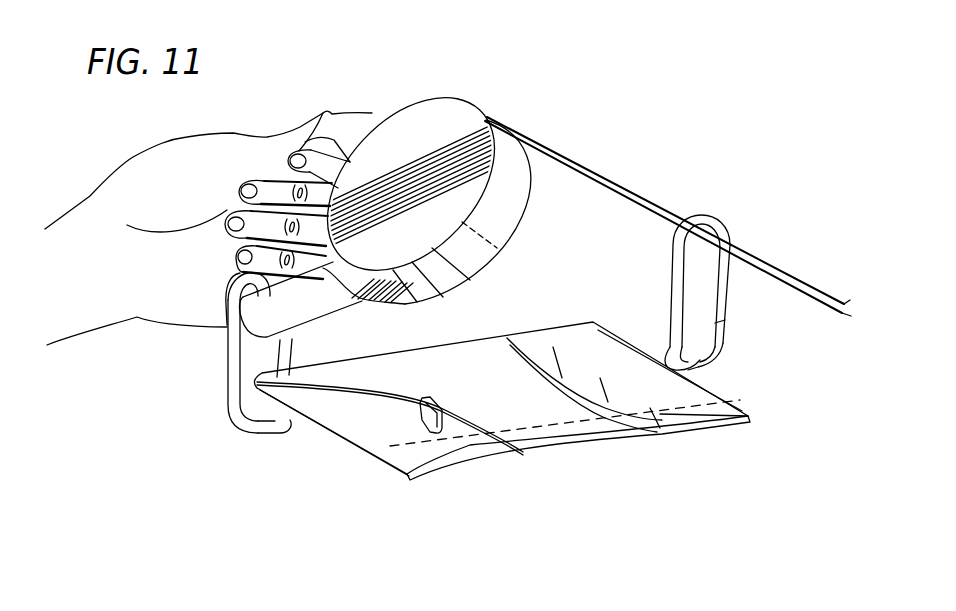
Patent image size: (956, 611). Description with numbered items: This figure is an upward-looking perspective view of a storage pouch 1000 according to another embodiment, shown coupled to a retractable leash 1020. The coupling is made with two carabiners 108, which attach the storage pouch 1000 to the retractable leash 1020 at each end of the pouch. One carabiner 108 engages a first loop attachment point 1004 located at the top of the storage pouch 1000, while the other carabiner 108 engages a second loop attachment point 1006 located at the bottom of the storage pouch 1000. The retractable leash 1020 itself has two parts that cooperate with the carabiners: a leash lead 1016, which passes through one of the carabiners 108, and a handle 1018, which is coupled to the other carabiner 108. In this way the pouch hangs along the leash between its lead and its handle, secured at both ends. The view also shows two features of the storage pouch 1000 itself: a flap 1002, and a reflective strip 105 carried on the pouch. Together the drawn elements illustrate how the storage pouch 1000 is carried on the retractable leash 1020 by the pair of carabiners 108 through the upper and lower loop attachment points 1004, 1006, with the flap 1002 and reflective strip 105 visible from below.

The storage pouch 1000 is at (398, 491).
The flap 1002 is at (465, 433).
The first loop attachment point 1004 is at (287, 440).
The second loop attachment point 1006 is at (687, 372).
The reflective strip 105 is at (638, 412).
The carabiner 108 is at (227, 358).
The leash lead 1016 is at (593, 170).
The handle 1018 is at (230, 283).
The retractable leash 1020 is at (442, 110).